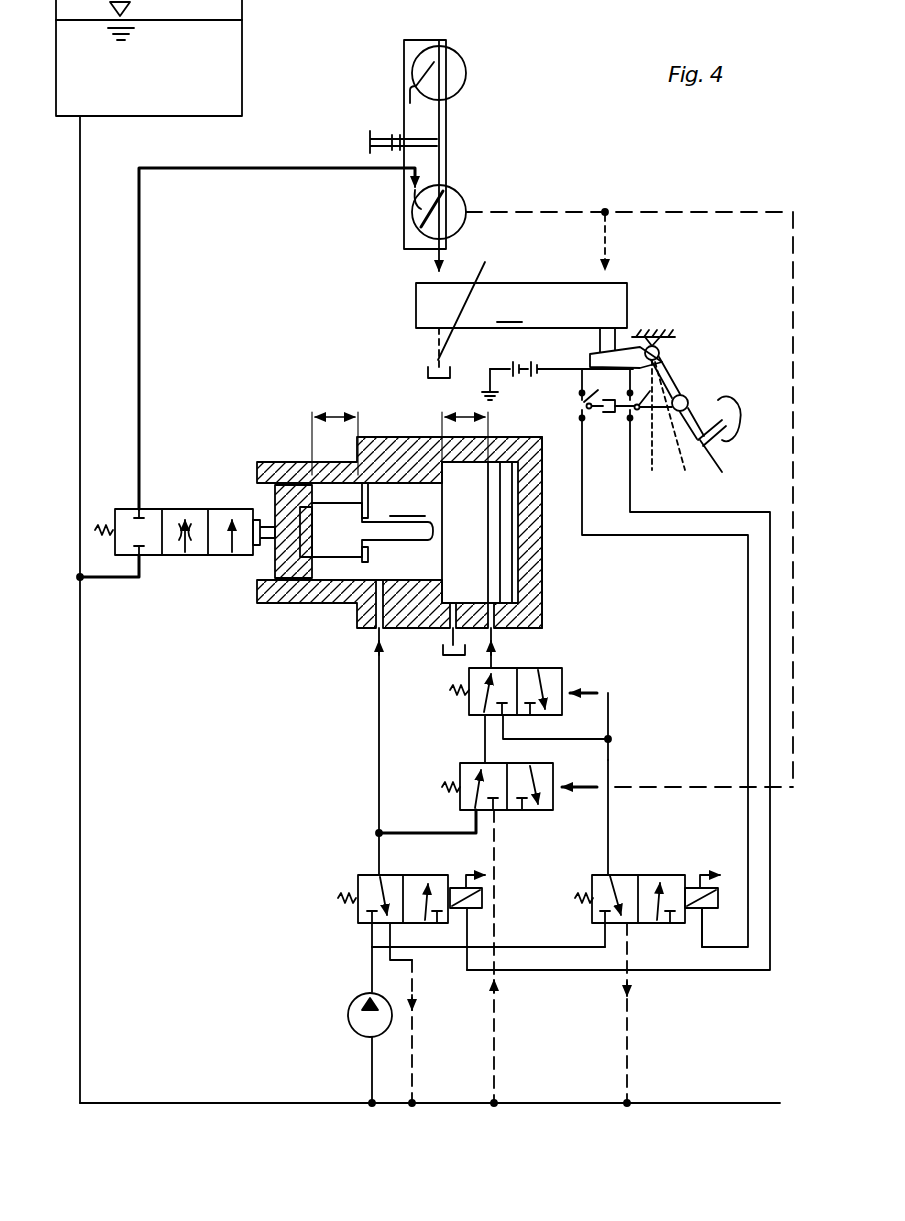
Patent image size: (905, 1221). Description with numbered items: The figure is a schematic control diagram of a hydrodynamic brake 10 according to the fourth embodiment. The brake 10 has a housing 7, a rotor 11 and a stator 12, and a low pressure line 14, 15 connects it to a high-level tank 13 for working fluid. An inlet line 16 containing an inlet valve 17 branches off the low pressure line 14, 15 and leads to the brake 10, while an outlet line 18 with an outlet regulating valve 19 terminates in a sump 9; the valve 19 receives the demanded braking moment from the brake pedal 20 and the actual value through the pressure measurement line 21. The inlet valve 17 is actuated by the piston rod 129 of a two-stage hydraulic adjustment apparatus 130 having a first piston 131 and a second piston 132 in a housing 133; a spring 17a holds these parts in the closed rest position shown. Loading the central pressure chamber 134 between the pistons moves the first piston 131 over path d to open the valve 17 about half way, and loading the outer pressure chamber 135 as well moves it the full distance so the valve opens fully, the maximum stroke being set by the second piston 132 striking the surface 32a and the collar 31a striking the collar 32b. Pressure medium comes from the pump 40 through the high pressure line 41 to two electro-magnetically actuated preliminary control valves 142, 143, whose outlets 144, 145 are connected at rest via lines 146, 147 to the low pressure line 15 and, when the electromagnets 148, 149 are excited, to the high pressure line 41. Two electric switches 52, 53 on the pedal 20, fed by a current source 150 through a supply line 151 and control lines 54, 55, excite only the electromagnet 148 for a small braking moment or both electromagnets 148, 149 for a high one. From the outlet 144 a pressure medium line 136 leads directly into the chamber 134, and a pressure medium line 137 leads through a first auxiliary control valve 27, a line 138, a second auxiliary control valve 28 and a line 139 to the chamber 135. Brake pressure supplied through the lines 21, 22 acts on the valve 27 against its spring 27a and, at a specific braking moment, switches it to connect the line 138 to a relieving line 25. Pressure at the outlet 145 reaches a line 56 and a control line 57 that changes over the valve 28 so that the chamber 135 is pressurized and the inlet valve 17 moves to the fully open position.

The housing 7 is at (404, 192).
The sump 9 is at (426, 375).
The hydrodynamic brake 10 is at (401, 110).
The rotor 11 is at (422, 223).
The stator 12 is at (458, 210).
The high-level tank 13 is at (222, 78).
The low pressure line 14 is at (80, 240).
The low pressure line 15 is at (150, 1098).
The inlet line 16 is at (139, 240).
The inlet valve 17 is at (152, 554).
The spring 17a is at (108, 528).
The outlet line 18 is at (446, 259).
The outlet regulating valve 19 is at (521, 305).
The brake pedal 20 is at (673, 386).
The pressure measurement line 21 is at (605, 252).
The line 22 is at (700, 214).
The relieving line 25 is at (496, 1057).
The first auxiliary control valve 27 is at (468, 778).
The spring 27a is at (458, 790).
The second auxiliary control valve 28 is at (552, 683).
The collar 31a is at (370, 557).
The surface 32a is at (464, 532).
The collar 32b is at (316, 568).
The pump 40 is at (362, 1027).
The high pressure line 41 is at (453, 946).
The electric switch 52 is at (627, 413).
The electric switch 53 is at (578, 414).
The control line 54 is at (772, 825).
The control line 55 is at (746, 825).
The line 56 is at (572, 740).
The control line 57 is at (610, 712).
The piston rod 129 is at (268, 547).
The two-stage hydraulic adjustment apparatus 130 is at (297, 453).
The first piston 131 is at (292, 575).
The second piston 132 is at (500, 567).
The housing 133 is at (541, 600).
The central pressure chamber 134 is at (395, 500).
The pressure chamber 135 is at (520, 497).
The pressure medium line 136 is at (376, 765).
The pressure medium line 137 is at (450, 833).
The line 138 is at (484, 742).
The line 139 is at (492, 648).
The preliminary control valve 142 is at (357, 917).
The preliminary control valve 143 is at (592, 910).
The outlet 144 is at (376, 852).
The outlet 145 is at (610, 825).
The line 146 is at (414, 1030).
The line 147 is at (628, 1068).
The electromagnet 148 is at (480, 902).
The electromagnet 149 is at (716, 911).
The current source 150 is at (510, 362).
The supply line 151 is at (567, 375).